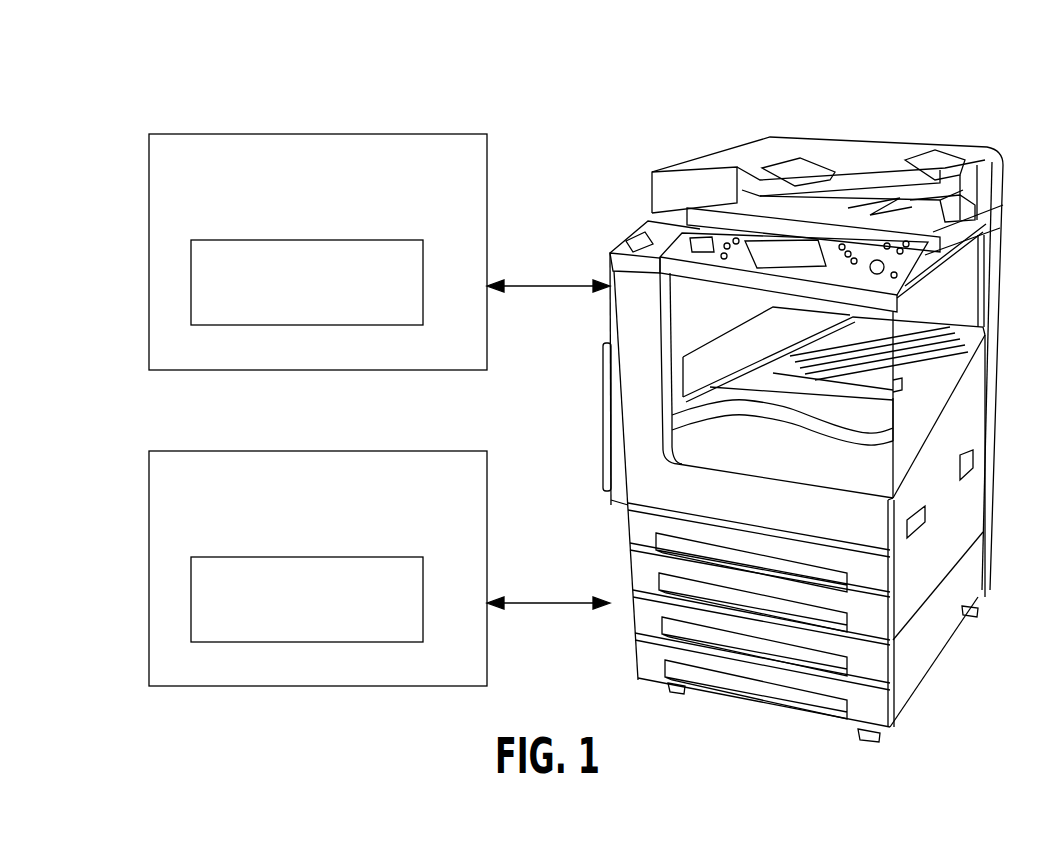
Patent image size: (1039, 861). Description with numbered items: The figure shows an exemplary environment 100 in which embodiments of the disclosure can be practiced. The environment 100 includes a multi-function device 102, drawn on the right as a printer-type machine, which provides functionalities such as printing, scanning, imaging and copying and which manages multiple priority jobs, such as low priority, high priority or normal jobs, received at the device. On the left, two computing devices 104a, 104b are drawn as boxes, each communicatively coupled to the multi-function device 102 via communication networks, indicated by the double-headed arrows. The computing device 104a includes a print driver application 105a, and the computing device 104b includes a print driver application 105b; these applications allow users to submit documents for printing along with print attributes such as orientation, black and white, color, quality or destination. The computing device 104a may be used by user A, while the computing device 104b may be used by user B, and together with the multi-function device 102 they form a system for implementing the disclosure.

The environment 100 is at (524, 92).
The multi-function device 102 is at (662, 184).
The computing device 104a is at (320, 134).
The computing device 104b is at (320, 451).
The print driver application 105a is at (398, 240).
The print driver application 105b is at (398, 557).